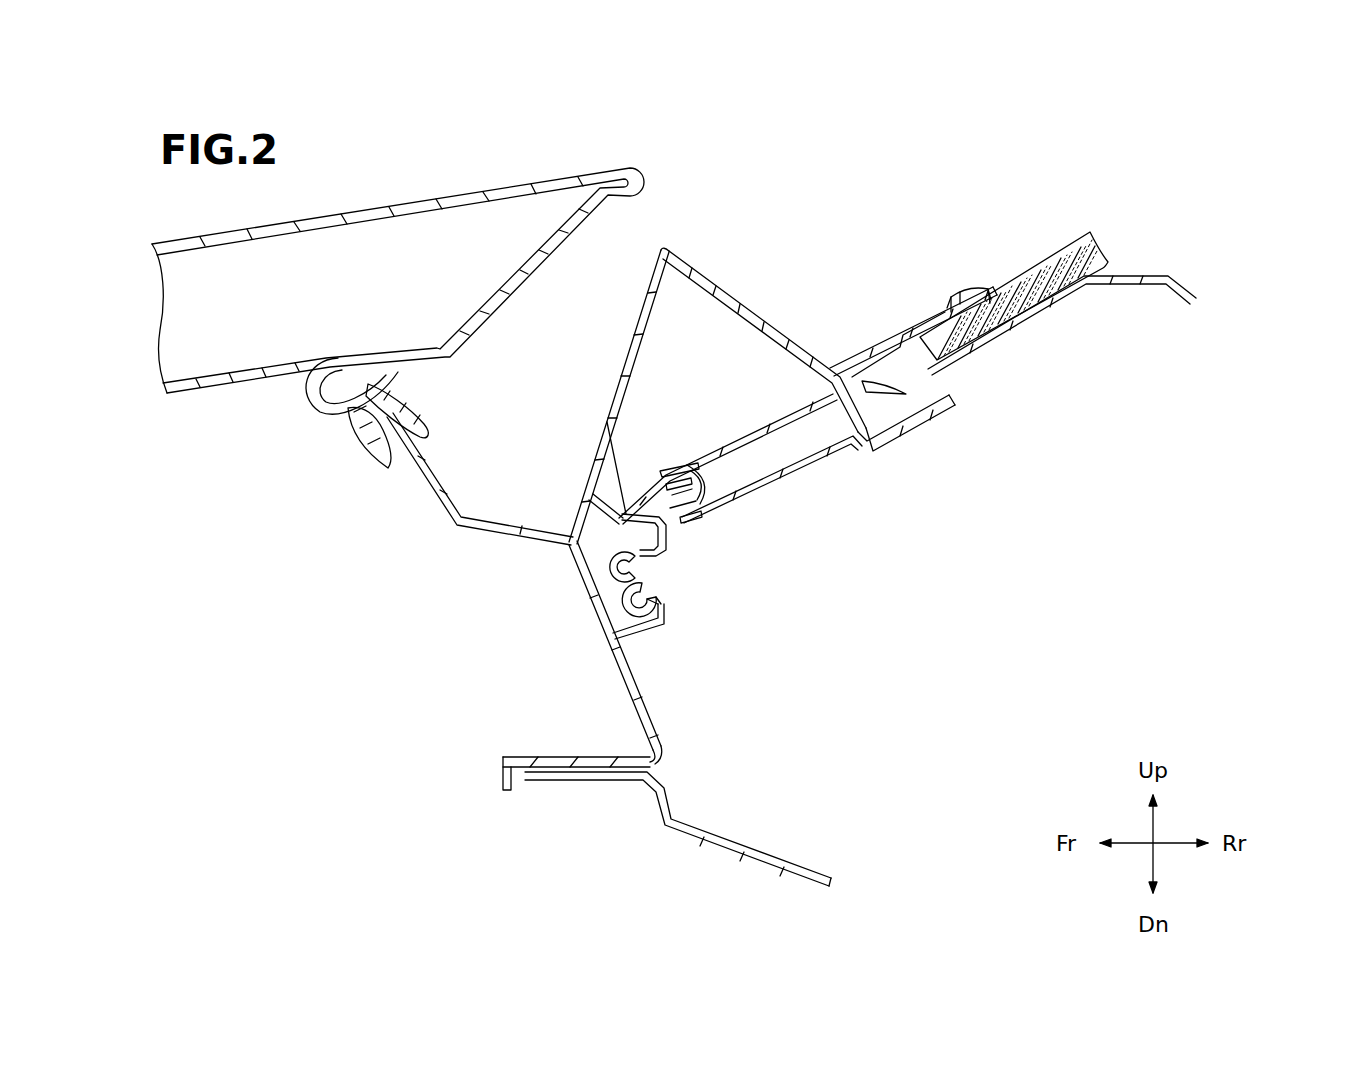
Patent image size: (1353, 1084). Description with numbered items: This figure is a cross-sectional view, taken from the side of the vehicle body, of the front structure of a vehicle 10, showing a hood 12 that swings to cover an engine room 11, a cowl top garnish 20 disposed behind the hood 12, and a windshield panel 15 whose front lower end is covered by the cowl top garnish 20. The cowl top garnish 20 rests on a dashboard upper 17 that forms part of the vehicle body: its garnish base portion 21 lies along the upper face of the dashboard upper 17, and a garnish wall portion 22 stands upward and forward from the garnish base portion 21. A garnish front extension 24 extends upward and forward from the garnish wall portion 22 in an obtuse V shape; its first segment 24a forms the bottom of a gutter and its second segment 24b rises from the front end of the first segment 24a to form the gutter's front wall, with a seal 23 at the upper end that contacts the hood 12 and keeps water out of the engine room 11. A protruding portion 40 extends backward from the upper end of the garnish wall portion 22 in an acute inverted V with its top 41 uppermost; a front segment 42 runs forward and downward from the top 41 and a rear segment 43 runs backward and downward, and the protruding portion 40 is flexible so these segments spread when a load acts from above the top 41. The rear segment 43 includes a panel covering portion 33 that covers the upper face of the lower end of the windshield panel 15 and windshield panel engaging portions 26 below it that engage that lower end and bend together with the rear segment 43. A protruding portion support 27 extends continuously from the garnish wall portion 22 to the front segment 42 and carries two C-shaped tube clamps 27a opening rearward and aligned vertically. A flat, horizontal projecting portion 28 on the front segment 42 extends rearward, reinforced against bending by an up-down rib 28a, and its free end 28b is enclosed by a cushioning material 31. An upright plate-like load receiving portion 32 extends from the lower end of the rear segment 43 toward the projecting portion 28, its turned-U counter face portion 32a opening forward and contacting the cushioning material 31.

The vehicle 10 is at (1247, 155).
The engine room 11 is at (278, 702).
The hood 12 is at (153, 363).
The windshield panel 15 is at (1066, 245).
The dashboard upper 17 is at (720, 850).
The cowl top garnish 20 is at (895, 242).
The garnish base portion 21 is at (548, 757).
The garnish wall portion 22 is at (652, 708).
The seal 23 is at (313, 405).
The garnish front extension 24 is at (459, 534).
The first segment 24a is at (483, 575).
The second segment 24b is at (420, 472).
The windshield panel engaging portions 26 is at (918, 436).
The protruding portion support 27 is at (677, 612).
The tube clamps 27a is at (633, 593).
The projecting portion 28 is at (685, 475).
The rib 28a is at (610, 488).
The free end 28b is at (703, 468).
The cushioning material 31 is at (703, 508).
The load receiving portion 32 is at (798, 472).
The counter face portion 32a is at (705, 494).
The panel covering portion 33 is at (944, 300).
The protruding portion 40 is at (809, 314).
The top 41 is at (665, 248).
The front segment 42 is at (632, 332).
The rear segment 43 is at (718, 284).